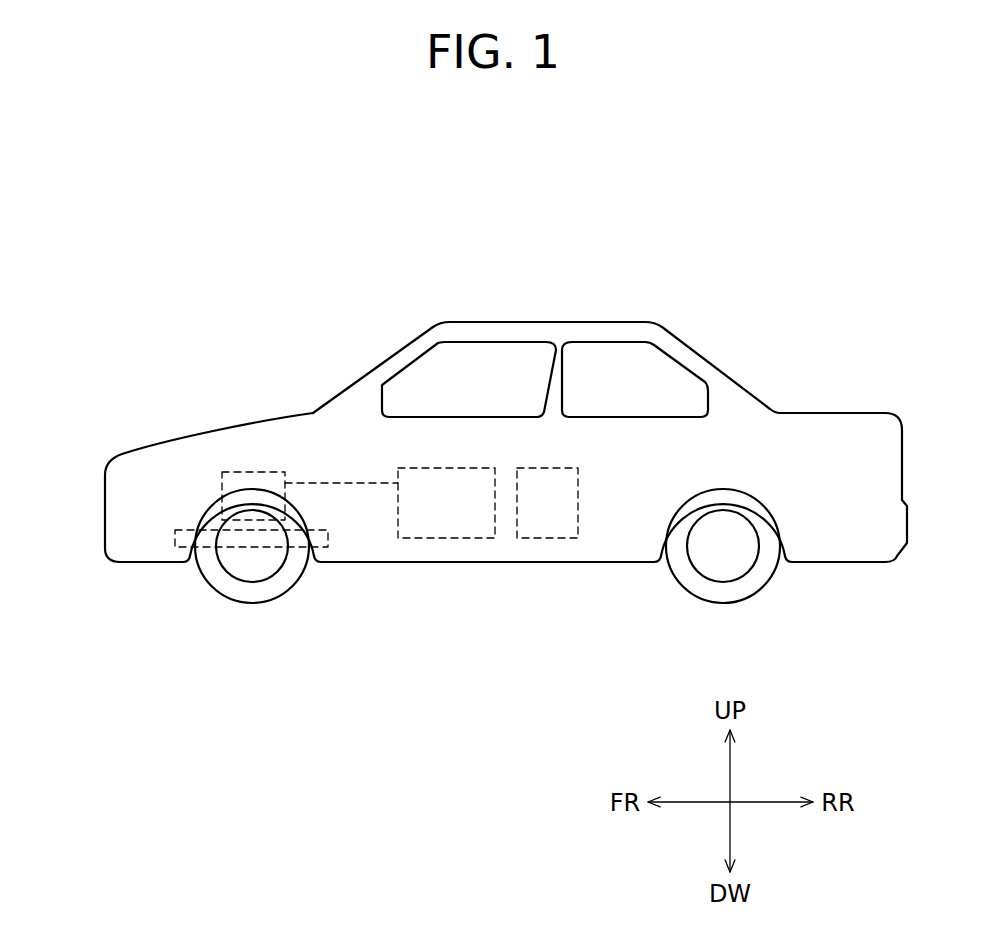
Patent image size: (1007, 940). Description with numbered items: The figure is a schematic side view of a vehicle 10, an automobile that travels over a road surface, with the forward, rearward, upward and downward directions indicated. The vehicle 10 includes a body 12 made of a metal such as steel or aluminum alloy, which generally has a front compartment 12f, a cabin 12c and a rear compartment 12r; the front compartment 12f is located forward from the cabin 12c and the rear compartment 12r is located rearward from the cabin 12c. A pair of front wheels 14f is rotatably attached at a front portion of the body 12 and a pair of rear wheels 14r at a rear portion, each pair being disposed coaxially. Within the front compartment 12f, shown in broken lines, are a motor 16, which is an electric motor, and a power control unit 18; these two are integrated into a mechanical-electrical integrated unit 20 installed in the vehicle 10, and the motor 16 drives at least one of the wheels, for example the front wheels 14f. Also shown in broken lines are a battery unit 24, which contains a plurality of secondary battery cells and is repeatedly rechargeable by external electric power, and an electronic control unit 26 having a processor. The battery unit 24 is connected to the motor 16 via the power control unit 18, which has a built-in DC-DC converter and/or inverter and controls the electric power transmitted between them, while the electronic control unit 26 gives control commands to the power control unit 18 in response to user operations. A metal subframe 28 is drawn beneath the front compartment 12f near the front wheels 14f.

The vehicle 10 is at (770, 270).
The body 12 is at (583, 322).
The cabin 12c is at (500, 302).
The front compartment 12f is at (135, 397).
The rear compartment 12r is at (828, 365).
The front wheels 14f is at (253, 592).
The rear wheels 14r is at (723, 592).
The motor 16 is at (297, 515).
The power control unit 18 is at (247, 470).
The mechanical-electrical integrated unit 20 is at (206, 360).
The battery unit 24 is at (447, 540).
The electronic control unit 26 is at (547, 540).
The subframe 28 is at (290, 545).